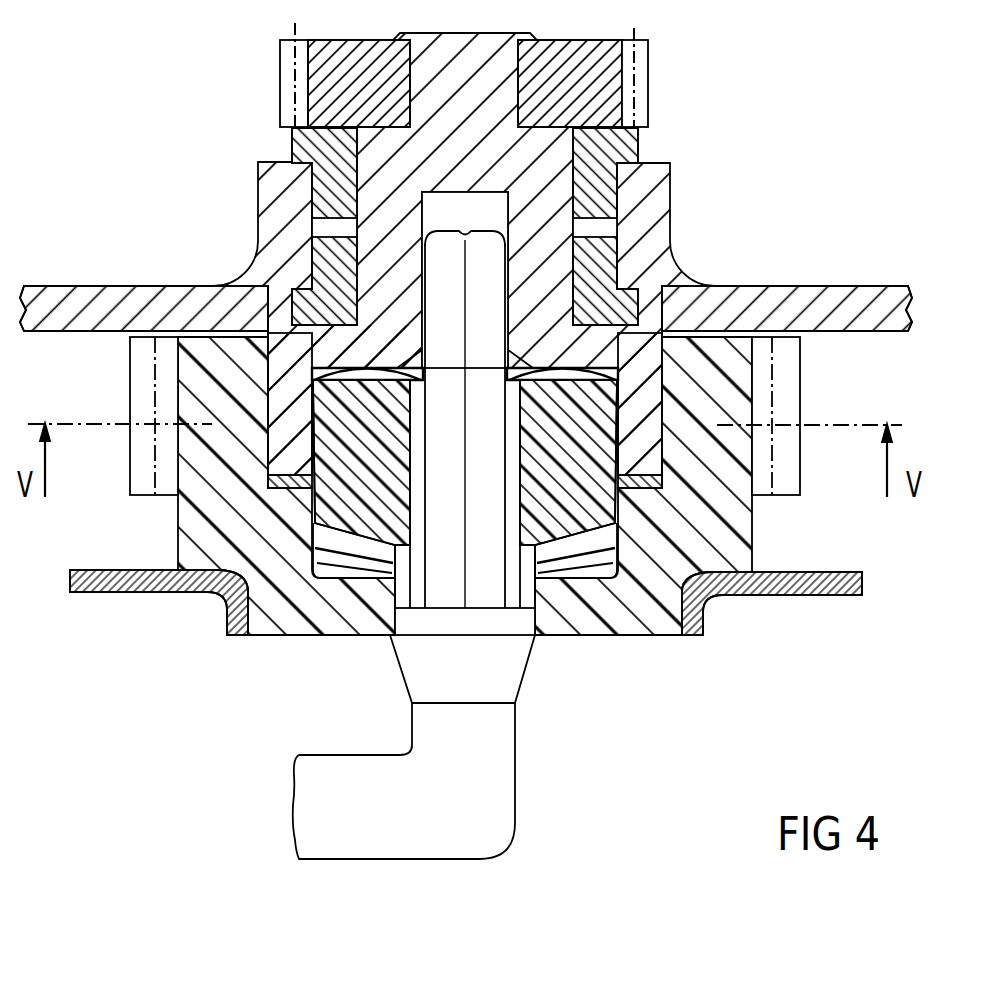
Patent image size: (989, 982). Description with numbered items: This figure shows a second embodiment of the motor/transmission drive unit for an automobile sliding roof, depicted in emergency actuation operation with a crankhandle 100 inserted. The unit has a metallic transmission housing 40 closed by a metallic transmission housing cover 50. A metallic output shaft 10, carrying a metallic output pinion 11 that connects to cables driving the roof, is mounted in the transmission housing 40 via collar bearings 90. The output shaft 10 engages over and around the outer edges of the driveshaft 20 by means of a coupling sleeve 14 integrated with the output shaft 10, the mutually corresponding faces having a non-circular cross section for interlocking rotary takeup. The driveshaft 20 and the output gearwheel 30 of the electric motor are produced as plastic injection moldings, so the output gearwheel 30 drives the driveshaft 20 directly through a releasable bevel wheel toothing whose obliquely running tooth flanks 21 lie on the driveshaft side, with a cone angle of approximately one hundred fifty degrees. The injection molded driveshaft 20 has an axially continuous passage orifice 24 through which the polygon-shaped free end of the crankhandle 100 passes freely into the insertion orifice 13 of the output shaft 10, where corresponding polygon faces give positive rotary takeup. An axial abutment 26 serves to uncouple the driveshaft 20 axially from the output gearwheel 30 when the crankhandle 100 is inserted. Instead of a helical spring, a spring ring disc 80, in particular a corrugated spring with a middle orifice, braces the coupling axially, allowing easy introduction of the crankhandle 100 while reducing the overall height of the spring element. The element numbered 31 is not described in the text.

The output shaft 10 is at (533, 165).
The output pinion 11 is at (597, 78).
The insertion orifice 13 is at (482, 217).
The coupling sleeve 14 is at (663, 372).
The driveshaft 20 is at (548, 515).
The tooth flanks 21 is at (593, 545).
The passage orifice 24 is at (413, 583).
The axial abutment 26 is at (527, 637).
The output gearwheel 30 is at (683, 510).
The seal lip 31 is at (565, 582).
The transmission housing 40 is at (855, 322).
The transmission housing cover 50 is at (808, 585).
The spring ring disc 80 is at (333, 363).
The collar bearings 90 is at (333, 268).
The crankhandle 100 is at (465, 773).